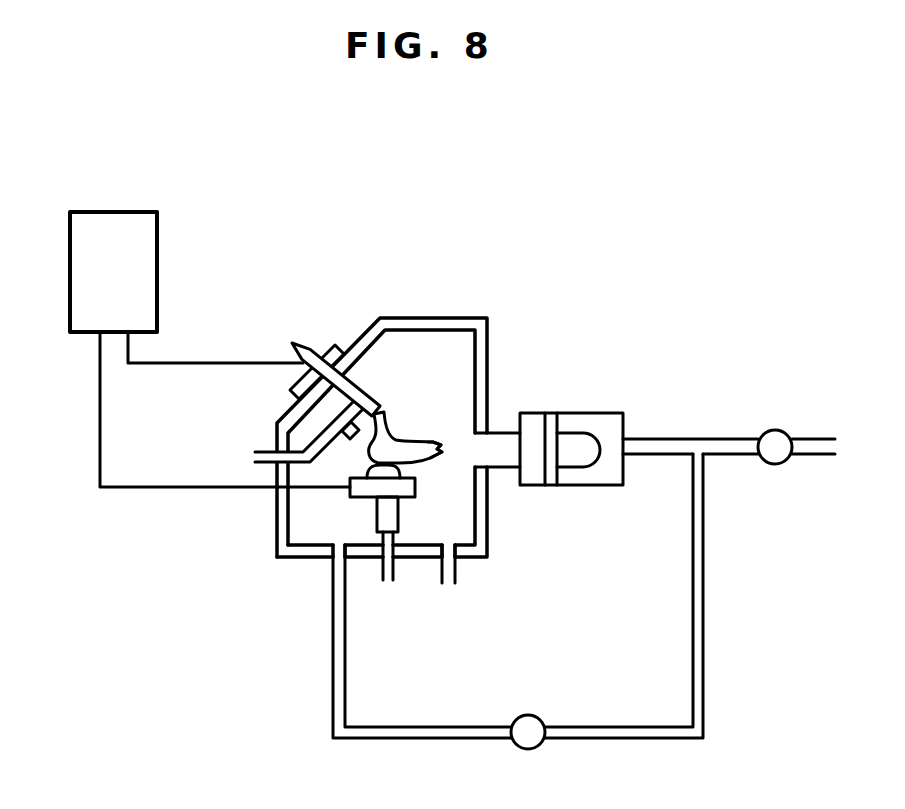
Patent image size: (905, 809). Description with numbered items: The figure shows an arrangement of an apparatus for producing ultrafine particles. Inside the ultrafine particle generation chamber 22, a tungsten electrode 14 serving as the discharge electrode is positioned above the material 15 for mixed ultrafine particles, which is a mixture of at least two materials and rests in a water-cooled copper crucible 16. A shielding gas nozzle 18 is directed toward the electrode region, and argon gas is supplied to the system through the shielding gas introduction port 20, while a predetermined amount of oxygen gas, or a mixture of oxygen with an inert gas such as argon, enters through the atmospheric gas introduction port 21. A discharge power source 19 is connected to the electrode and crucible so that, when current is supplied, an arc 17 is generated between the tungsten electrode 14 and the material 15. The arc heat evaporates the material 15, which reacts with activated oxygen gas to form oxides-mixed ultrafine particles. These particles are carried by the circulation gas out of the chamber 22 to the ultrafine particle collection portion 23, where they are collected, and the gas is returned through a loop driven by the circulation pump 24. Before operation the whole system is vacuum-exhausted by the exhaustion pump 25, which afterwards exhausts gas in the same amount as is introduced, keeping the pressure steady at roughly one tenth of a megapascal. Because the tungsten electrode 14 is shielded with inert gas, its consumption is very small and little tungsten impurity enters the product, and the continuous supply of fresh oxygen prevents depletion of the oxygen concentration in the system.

The tungsten electrode 14 is at (383, 424).
The material for mixed ultrafine particles 15 is at (410, 468).
The water-cooled copper crucible 16 is at (357, 497).
The arc 17 is at (418, 434).
The shielding gas nozzle 18 is at (359, 389).
The discharge power source 19 is at (113, 212).
The shielding gas introduction port 20 is at (253, 457).
The atmospheric gas introduction port 21 is at (447, 586).
The ultrafine particle generation chamber 22 is at (447, 318).
The ultrafine particle collection portion 23 is at (583, 413).
The circulation pump 24 is at (528, 750).
The exhaustion pump 25 is at (776, 430).